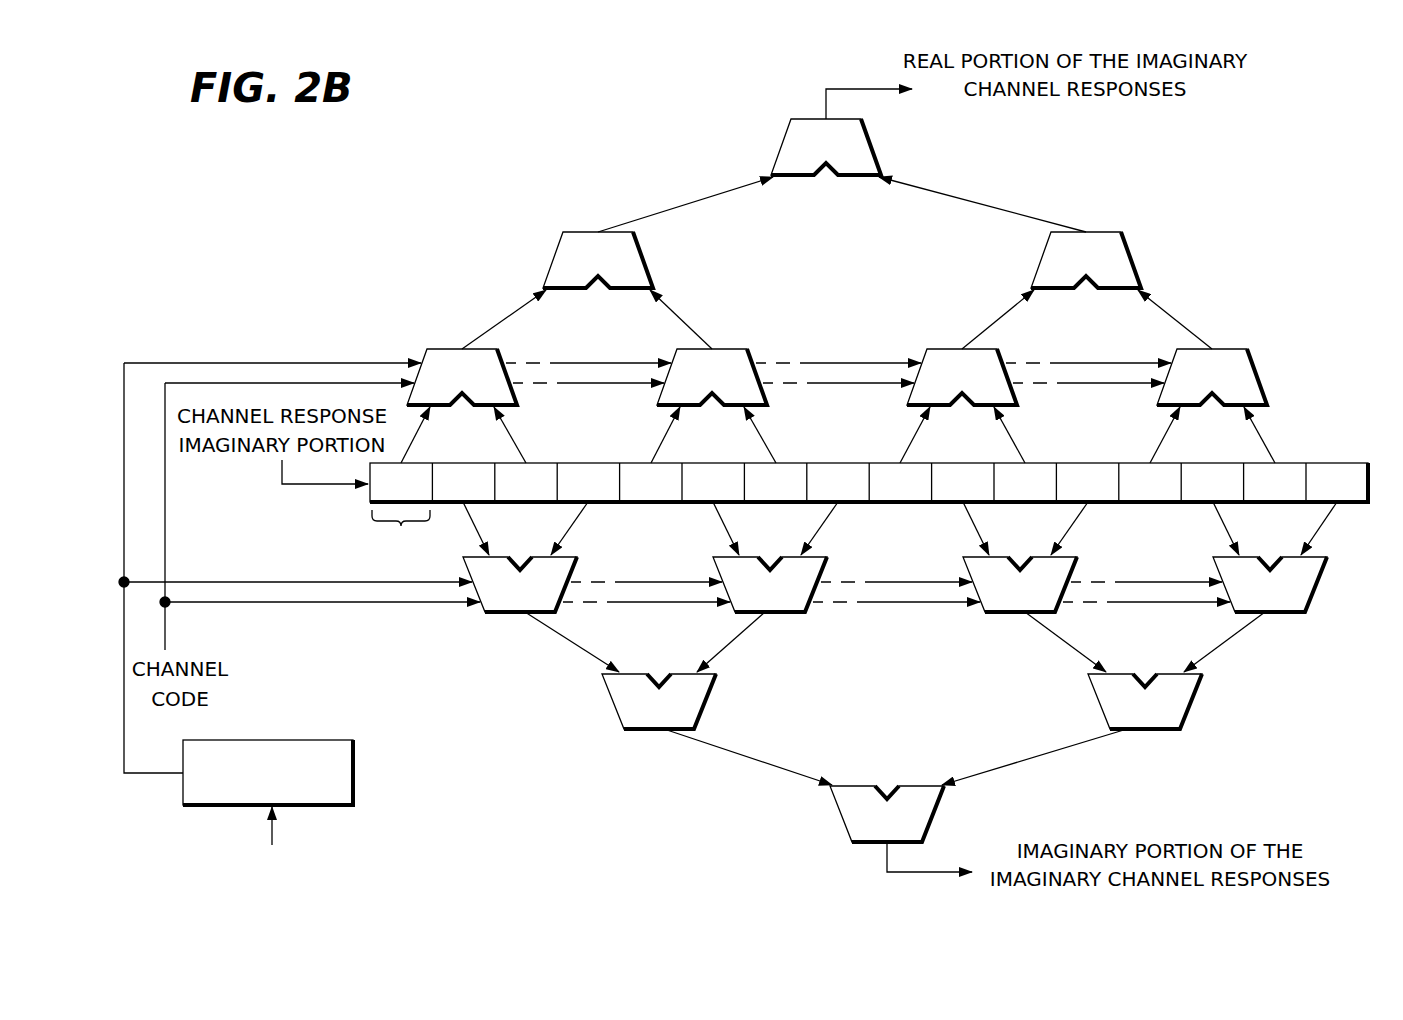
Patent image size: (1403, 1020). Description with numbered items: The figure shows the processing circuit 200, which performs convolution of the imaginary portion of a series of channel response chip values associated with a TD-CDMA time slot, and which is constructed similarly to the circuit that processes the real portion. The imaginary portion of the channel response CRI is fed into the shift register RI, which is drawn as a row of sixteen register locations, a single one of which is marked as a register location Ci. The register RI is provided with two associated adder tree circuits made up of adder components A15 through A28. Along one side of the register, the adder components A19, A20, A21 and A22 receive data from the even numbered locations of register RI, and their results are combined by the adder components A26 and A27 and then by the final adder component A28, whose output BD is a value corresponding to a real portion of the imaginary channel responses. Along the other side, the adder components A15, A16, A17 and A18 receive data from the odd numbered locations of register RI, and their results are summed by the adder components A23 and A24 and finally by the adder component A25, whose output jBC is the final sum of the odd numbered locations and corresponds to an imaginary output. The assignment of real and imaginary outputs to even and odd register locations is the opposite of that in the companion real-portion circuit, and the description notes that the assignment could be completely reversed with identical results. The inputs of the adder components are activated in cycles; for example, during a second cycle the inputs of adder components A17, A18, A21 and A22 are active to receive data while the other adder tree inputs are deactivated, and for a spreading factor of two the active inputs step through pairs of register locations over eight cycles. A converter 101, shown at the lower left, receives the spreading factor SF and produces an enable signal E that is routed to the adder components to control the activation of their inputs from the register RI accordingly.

The processing circuit 200 is at (296, 207).
The converter 101 is at (355, 778).
The adder component A15 is at (502, 612).
The adder component A16 is at (805, 612).
The adder component A17 is at (995, 612).
The adder component A18 is at (1312, 602).
The adder component A19 is at (445, 349).
The adder component A20 is at (738, 349).
The adder component A21 is at (930, 349).
The adder component A22 is at (1232, 349).
The adder component A23 is at (617, 722).
The adder component A24 is at (1193, 712).
The adder component A25 is at (838, 815).
The adder component A26 is at (583, 232).
The adder component A27 is at (1105, 232).
The adder component A28 is at (782, 147).
The output BD is at (826, 86).
The imaginary output jBC is at (880, 858).
The imaginary portion of the channel response CRI is at (290, 488).
The shift register RI is at (1350, 462).
The register location Ci is at (401, 534).
The enable signal E is at (140, 775).
The spreading factor SF is at (270, 843).